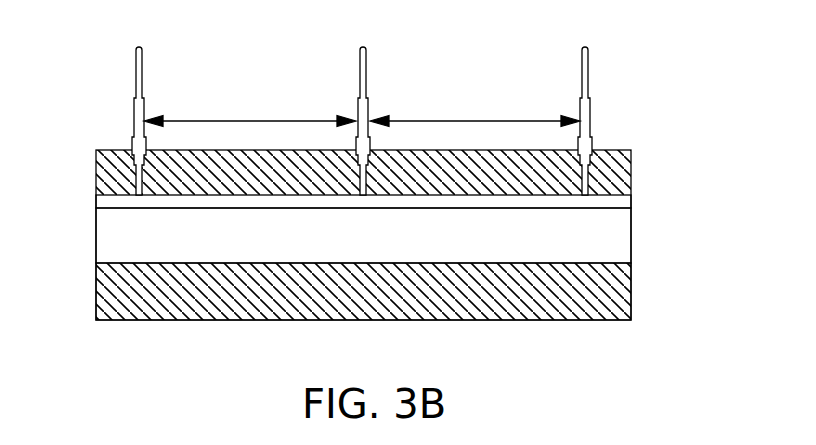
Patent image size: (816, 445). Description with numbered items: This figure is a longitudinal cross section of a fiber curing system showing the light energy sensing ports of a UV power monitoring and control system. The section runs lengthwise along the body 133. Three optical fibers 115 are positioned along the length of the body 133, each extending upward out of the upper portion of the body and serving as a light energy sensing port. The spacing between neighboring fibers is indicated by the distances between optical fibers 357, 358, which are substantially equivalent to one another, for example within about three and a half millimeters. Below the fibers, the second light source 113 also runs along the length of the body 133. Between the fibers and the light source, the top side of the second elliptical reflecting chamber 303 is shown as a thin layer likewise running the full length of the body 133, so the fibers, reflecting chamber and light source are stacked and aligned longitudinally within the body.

The optical fibers 115 is at (136, 77).
The distance between optical fibers 357 is at (251, 121).
The distance between optical fibers 358 is at (471, 121).
The second light source 113 is at (381, 244).
The second elliptical reflecting chamber 303 is at (617, 202).
The body 133 is at (540, 320).